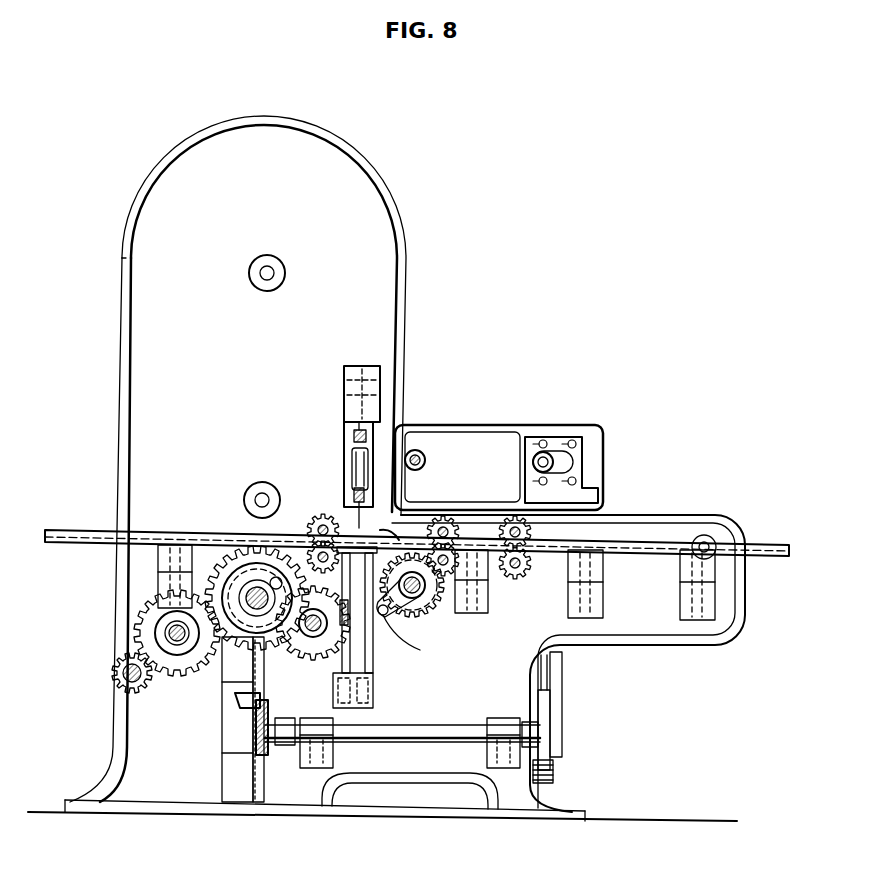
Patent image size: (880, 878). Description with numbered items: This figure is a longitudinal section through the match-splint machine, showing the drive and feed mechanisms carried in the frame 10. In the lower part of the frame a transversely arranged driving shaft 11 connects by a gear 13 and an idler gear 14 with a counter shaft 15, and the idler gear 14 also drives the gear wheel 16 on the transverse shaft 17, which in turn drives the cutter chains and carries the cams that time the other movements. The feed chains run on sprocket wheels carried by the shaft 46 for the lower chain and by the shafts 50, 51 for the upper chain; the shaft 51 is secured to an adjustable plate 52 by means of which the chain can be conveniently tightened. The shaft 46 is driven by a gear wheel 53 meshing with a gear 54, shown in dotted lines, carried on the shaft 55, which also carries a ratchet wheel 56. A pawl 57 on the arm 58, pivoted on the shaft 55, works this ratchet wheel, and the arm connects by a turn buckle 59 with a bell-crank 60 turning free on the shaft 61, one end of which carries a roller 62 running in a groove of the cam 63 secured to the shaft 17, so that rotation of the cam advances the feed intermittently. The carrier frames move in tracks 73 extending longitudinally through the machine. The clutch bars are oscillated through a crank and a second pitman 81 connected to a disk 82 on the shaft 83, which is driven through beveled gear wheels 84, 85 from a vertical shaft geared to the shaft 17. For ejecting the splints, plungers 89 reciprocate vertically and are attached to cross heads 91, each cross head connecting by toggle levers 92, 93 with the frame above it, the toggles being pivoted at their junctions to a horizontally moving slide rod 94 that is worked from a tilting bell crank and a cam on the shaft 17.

The frame 10 is at (378, 316).
The driving shaft 11 is at (128, 680).
The gear 13 is at (113, 673).
The idler gear 14 is at (172, 672).
The counter shaft 15 is at (165, 632).
The gear wheel 16 is at (251, 597).
The shaft 17 is at (257, 598).
The shaft 46 is at (414, 543).
The shaft 50 is at (420, 453).
The shaft 51 is at (548, 453).
The adjustable plate 52 is at (578, 458).
The gear wheel 53 is at (388, 532).
The gear 54 is at (428, 590).
The shaft 55 is at (417, 598).
The ratchet wheel 56 is at (395, 612).
The pawl 57 is at (375, 640).
The arm 58 is at (372, 628).
The turn buckle 59 is at (343, 650).
The bell-crank 60 is at (310, 637).
The shaft 61 is at (309, 637).
The roller 62 is at (316, 531).
The cam 63 is at (291, 501).
The tracks 73 is at (762, 557).
The second pitman 81 is at (556, 720).
The disk 82 is at (553, 778).
The shaft 83 is at (428, 722).
The beveled gear wheel 84 is at (270, 757).
The beveled gear wheel 85 is at (248, 712).
The plungers 89 is at (354, 490).
The cross heads 91 is at (354, 462).
The toggle lever 92 is at (367, 443).
The toggle lever 93 is at (382, 403).
The slide rod 94 is at (353, 435).